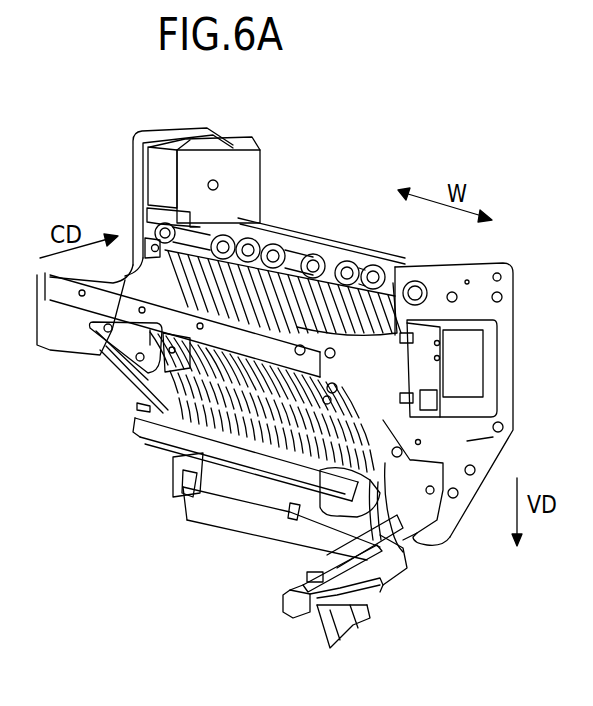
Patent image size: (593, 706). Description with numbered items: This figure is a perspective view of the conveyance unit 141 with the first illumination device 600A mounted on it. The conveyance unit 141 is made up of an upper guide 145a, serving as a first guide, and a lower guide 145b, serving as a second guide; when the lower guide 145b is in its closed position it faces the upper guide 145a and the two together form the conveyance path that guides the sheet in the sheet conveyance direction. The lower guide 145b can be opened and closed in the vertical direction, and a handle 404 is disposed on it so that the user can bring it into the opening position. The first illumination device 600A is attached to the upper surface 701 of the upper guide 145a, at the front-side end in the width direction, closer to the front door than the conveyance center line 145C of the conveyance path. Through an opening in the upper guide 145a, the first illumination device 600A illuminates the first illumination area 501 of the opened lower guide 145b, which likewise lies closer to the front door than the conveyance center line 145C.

The conveyance unit 141 is at (106, 173).
The upper guide 145a is at (283, 203).
The lower guide 145b is at (190, 473).
The conveyance center line 145C is at (147, 383).
The upper surface 701 is at (338, 230).
The first illumination device 600A is at (163, 423).
The first illumination area 501 is at (303, 520).
The handle 404 is at (370, 597).